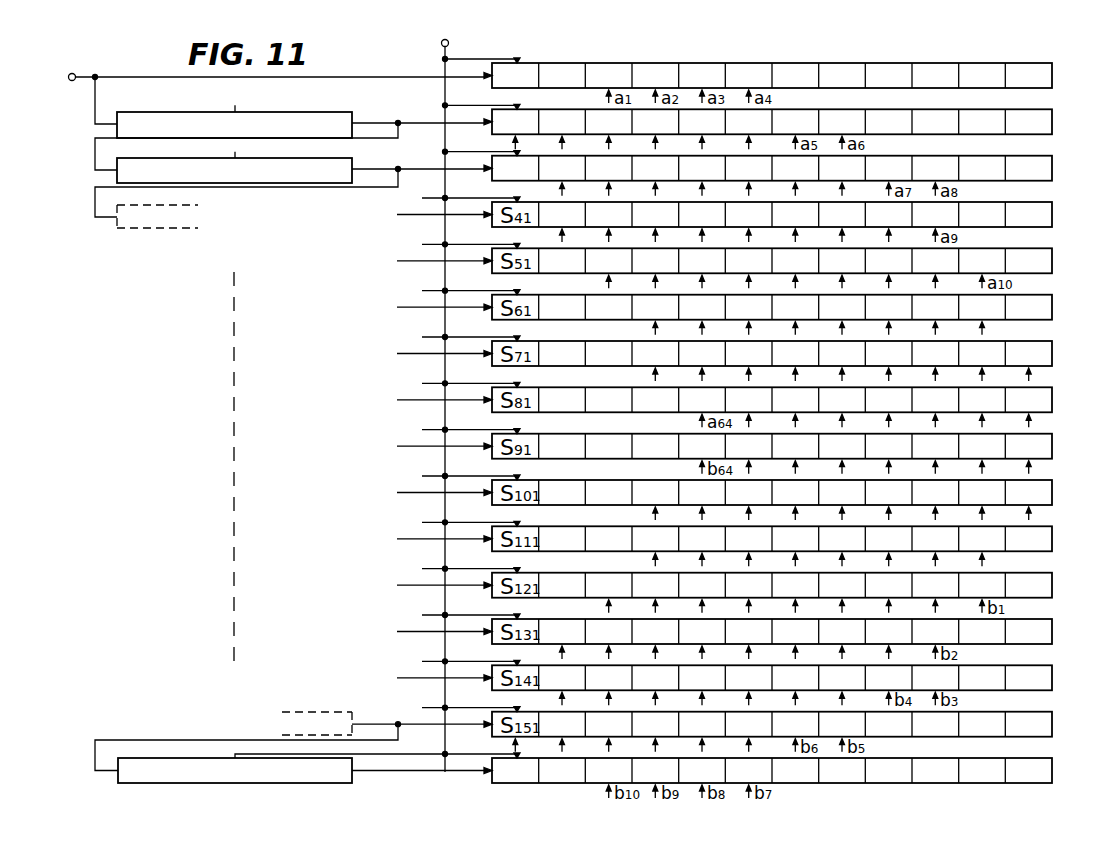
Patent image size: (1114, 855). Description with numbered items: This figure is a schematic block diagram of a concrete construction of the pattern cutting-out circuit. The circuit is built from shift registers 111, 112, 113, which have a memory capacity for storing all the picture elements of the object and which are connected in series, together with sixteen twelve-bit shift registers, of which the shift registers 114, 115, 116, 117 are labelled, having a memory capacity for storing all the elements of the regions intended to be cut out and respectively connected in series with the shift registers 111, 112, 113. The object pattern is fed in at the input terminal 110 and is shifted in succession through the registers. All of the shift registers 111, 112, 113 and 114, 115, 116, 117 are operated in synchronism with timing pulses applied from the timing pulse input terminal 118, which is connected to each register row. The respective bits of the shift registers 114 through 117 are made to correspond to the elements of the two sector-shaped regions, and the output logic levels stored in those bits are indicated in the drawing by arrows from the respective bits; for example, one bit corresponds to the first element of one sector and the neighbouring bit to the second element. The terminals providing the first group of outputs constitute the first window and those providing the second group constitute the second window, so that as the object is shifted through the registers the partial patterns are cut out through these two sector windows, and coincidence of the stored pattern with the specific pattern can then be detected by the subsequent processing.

The input terminal 110 is at (274, 85).
The shift register 111 is at (135, 111).
The shift register 112 is at (117, 164).
The shift register 113 is at (158, 758).
The 12-bit shift register 114 is at (1052, 76).
The 12-bit shift register 115 is at (1052, 122).
The 12-bit shift register 116 is at (1052, 168).
The 12-bit shift register 117 is at (1052, 770).
The timing pulse input terminal 118 is at (447, 46).